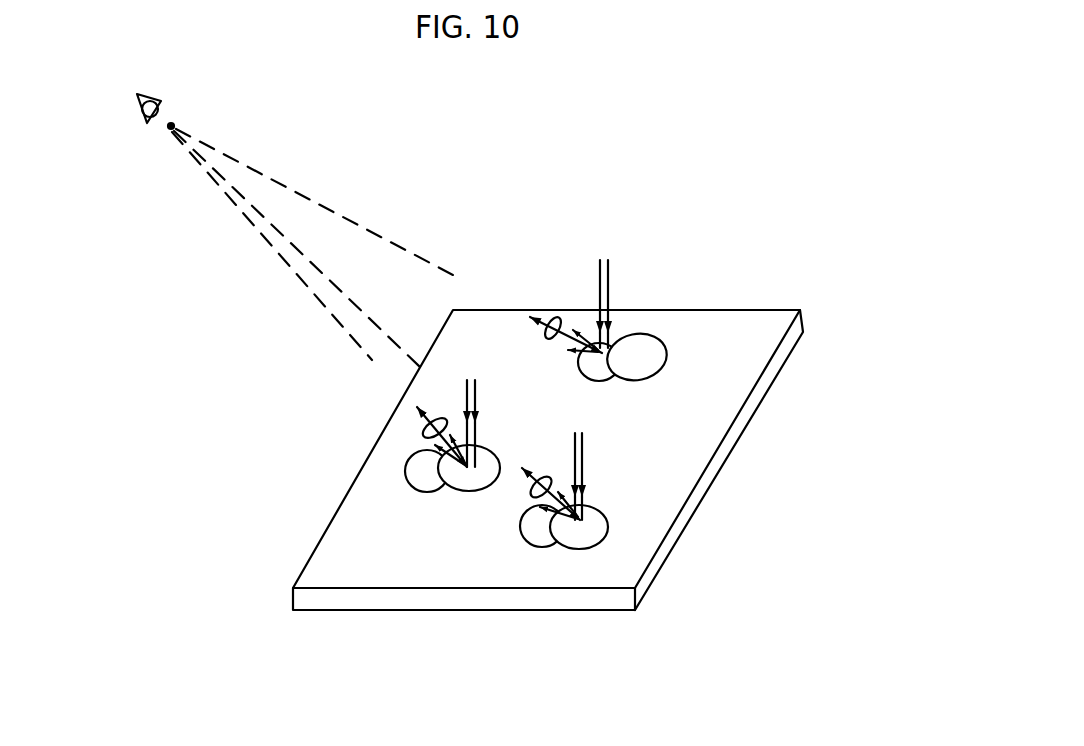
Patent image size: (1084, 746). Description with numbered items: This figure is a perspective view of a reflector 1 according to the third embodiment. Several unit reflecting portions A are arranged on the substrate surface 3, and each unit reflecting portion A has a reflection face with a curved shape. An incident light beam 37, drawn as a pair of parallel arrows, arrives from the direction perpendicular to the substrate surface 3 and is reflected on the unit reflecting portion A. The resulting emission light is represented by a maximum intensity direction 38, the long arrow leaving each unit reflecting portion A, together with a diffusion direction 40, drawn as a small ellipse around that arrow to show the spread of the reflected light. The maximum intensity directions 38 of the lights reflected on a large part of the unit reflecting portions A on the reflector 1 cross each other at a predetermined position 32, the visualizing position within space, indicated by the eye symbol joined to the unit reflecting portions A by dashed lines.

The liquid crystal display device 1 is at (548, 409).
The substrate surface 3 is at (692, 424).
The predetermined position 32 is at (172, 124).
The incident light beam 37 is at (609, 270).
The maximum intensity direction 38 is at (542, 322).
The diffusion direction 40 is at (552, 316).
The unit reflecting portion A is at (600, 372).